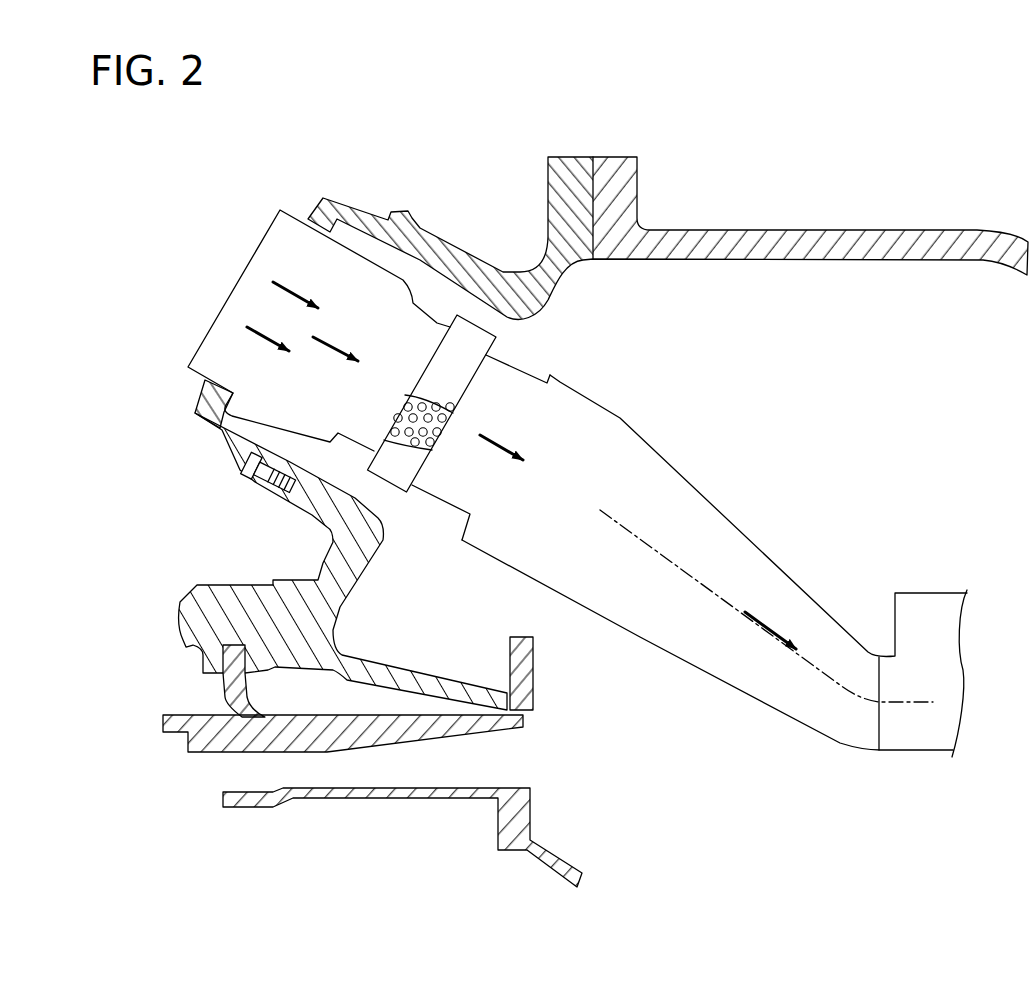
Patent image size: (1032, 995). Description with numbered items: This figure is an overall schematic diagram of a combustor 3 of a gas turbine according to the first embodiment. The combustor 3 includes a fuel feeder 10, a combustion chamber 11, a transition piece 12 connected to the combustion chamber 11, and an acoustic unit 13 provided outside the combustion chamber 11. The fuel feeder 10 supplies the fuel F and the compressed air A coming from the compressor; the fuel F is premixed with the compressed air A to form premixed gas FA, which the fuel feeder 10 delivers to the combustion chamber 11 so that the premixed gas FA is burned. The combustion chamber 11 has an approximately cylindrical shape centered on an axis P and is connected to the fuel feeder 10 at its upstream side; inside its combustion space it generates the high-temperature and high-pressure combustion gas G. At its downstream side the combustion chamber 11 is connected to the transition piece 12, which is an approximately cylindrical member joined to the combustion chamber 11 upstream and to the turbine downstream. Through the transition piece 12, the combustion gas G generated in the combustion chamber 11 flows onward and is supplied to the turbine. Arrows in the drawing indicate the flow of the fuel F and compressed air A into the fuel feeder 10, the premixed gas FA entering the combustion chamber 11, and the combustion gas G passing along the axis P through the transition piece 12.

The combustor 3 is at (318, 291).
The fuel feeder 10 is at (420, 330).
The combustion chamber 11 is at (498, 422).
The transition piece 12 is at (714, 566).
The acoustic unit 13 is at (442, 450).
The fuel F is at (296, 290).
The compressed air A is at (266, 342).
The premixed gas FA is at (330, 341).
The combustion gas G is at (507, 437).
The axis P is at (724, 596).